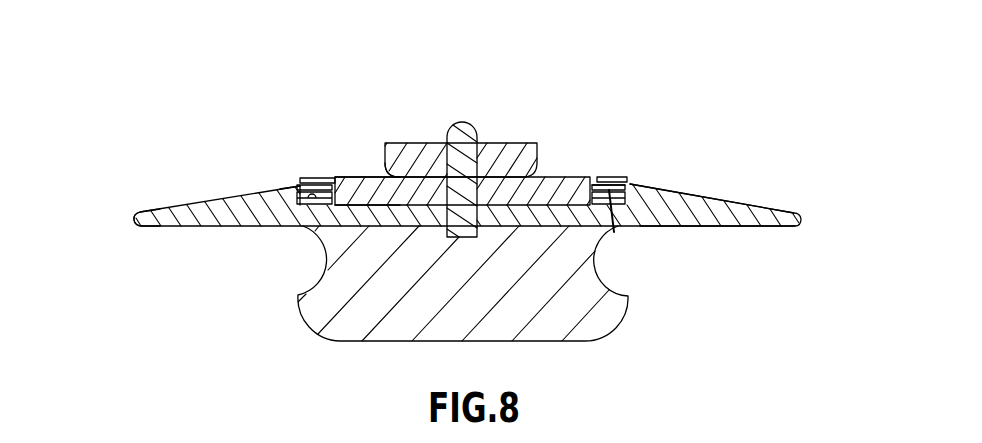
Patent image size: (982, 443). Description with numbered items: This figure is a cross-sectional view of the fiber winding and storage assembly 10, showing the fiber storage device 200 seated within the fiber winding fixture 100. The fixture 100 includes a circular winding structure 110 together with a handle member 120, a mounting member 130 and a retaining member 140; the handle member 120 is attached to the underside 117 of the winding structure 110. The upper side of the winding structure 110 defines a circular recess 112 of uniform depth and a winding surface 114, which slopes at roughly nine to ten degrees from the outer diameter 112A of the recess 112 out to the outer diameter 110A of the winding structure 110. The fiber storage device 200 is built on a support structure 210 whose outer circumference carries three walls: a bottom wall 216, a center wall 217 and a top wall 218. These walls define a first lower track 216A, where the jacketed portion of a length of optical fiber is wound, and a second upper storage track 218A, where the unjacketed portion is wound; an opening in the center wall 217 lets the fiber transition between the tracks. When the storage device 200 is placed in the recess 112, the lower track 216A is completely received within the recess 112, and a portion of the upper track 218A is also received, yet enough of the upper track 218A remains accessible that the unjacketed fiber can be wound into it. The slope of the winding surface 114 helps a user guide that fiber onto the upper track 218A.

The fiber winding and storage assembly 10 is at (338, 76).
The fiber winding fixture 100 is at (768, 162).
The winding structure 110 is at (780, 210).
The outer diameter of winding structure 110A is at (135, 218).
The recess 112 is at (290, 176).
The outer diameter of recess 112A is at (290, 184).
The winding surface 114 is at (702, 183).
The second side (underside) 117 is at (768, 227).
The handle member 120 is at (628, 298).
The mounting member 130 is at (458, 120).
The retaining member 140 is at (517, 143).
The fiber storage device 200 is at (566, 165).
The support structure 210 is at (340, 191).
The bottom wall 216 is at (320, 200).
The first lower track 216A is at (400, 163).
The center wall 217 is at (614, 232).
The top wall 218 is at (606, 176).
The second upper storage track 218A is at (648, 166).